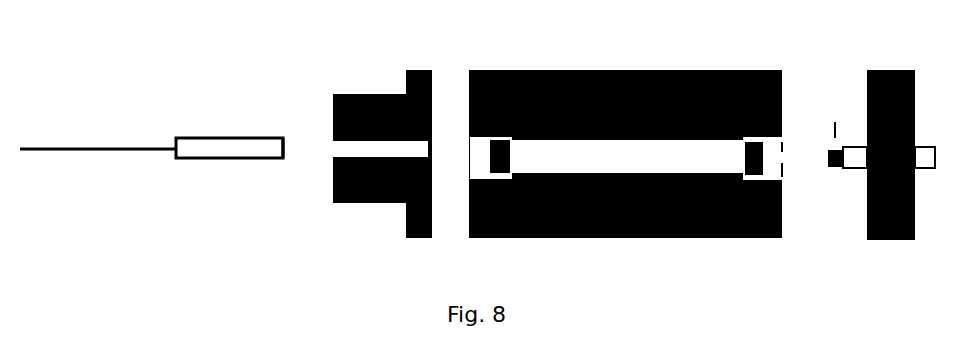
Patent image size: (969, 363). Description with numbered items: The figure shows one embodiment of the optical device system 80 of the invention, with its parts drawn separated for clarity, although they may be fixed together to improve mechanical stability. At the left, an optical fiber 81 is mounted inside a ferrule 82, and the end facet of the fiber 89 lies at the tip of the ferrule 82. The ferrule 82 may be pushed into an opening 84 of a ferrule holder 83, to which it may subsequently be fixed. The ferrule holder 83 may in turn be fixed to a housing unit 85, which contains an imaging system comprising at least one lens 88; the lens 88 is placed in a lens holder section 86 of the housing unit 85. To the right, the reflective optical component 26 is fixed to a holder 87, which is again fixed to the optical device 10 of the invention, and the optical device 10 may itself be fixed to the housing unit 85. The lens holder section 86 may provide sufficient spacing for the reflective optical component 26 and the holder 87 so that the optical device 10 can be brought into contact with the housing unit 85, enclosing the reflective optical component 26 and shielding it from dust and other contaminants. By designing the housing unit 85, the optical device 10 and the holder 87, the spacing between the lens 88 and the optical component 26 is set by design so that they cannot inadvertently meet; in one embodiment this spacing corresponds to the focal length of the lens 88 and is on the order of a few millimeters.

The optical device system 80 is at (276, 97).
The optical fiber 81 is at (108, 165).
The ferrule 82 is at (229, 158).
The end facet of the fiber 89 is at (277, 158).
The ferrule holder 83 is at (380, 205).
The opening 84 is at (330, 150).
The housing unit 85 is at (608, 245).
The lens holder section 86 is at (465, 165).
The lens 88 is at (489, 167).
The optical device 10 is at (898, 245).
The reflective optical component 26 is at (827, 80).
The holder 87 is at (855, 168).